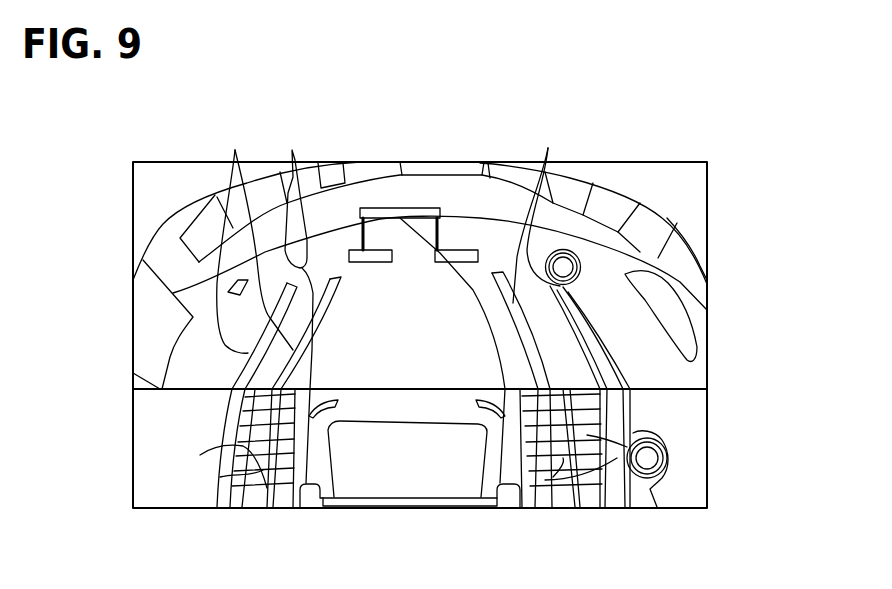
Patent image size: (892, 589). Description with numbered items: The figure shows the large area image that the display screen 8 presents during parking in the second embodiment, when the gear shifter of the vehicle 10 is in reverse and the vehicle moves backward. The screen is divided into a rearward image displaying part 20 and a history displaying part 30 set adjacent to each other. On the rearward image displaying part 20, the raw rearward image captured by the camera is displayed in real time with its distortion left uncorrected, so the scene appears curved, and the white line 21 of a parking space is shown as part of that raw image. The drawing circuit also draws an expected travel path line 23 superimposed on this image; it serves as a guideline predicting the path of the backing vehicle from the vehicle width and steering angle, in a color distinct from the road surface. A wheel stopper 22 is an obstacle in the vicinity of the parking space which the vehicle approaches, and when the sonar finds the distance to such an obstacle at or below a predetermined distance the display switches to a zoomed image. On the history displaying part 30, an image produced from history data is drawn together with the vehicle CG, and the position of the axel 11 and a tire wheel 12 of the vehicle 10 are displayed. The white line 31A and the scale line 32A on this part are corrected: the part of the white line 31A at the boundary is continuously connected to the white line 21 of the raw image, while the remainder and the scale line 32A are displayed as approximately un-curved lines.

The display screen 8 is at (643, 158).
The rearward image displaying part 20 is at (718, 162).
The history displaying part 30 is at (718, 392).
The white line 21 is at (548, 150).
The wheel stopper 22 is at (350, 250).
The expected travel path line 23 is at (292, 150).
The vehicle 10 is at (385, 413).
The axel 11 is at (442, 500).
The tire wheel 12 is at (311, 498).
The white line 31A is at (220, 475).
The scale line 32A is at (220, 445).